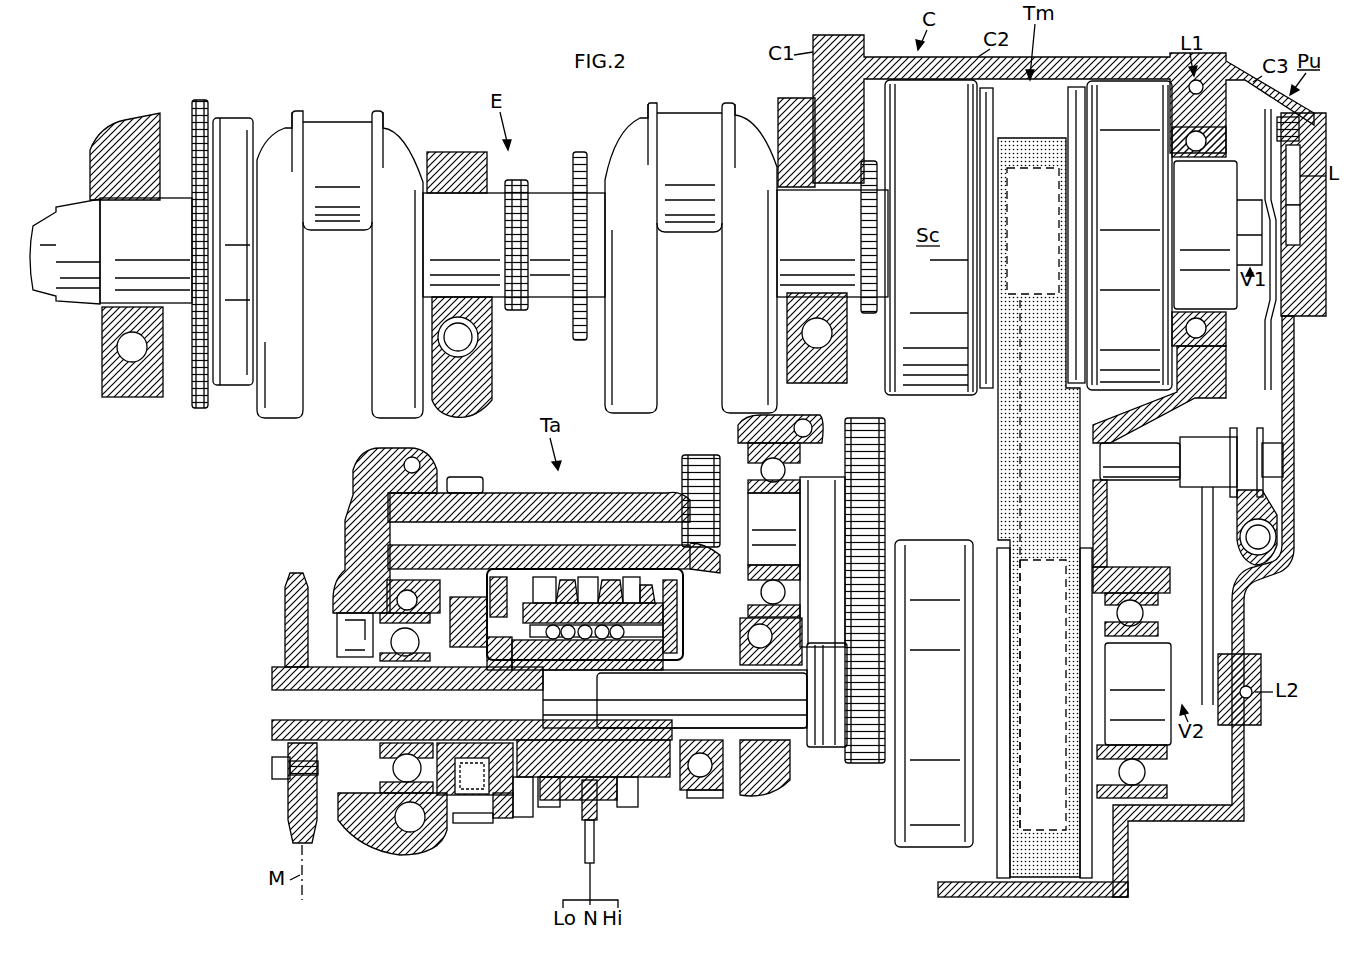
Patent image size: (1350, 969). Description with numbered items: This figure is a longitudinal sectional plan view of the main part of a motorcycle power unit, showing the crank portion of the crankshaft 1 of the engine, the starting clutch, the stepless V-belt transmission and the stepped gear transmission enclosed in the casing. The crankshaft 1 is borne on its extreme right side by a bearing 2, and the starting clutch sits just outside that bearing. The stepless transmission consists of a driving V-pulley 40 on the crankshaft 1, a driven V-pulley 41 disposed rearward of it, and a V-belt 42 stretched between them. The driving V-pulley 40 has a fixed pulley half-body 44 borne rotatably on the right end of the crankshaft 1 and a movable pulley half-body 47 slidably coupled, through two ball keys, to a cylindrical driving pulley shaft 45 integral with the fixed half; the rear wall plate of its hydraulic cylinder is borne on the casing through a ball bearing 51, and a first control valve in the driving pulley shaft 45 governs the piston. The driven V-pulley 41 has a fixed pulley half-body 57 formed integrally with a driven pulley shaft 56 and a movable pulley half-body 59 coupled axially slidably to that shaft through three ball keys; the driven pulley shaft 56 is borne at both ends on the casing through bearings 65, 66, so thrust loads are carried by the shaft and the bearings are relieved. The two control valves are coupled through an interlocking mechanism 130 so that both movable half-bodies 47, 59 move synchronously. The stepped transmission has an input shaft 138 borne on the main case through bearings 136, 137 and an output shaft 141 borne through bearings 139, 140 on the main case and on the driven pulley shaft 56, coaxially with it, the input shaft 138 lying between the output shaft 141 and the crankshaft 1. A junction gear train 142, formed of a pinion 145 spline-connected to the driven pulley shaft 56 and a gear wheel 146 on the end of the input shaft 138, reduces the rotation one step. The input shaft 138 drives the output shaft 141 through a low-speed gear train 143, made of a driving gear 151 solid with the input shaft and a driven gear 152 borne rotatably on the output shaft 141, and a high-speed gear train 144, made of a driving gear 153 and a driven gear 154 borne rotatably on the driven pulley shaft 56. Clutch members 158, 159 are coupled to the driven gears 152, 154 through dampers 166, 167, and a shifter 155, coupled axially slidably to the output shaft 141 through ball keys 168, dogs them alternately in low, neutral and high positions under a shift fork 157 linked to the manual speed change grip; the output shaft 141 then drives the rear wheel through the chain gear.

The crankshaft 1 is at (542, 200).
The bearing 2 is at (814, 182).
The driving V-pulley 40 is at (1118, 80).
The driven V-pulley 41 is at (910, 847).
The V-belt 42 is at (1034, 880).
The fixed pulley half-body 44 is at (987, 115).
The driving pulley shaft 45 is at (1032, 294).
The movable pulley half-body 47 is at (1070, 109).
The ball bearing 51 is at (1189, 97).
The driven pulley shaft 56 is at (675, 699).
The fixed pulley half-body 57 is at (1088, 855).
The movable pulley half-body 59 is at (997, 862).
The bearing 65 is at (771, 641).
The bearing 66 is at (1130, 604).
The interlocking mechanism 130 is at (1285, 466).
The bearing 136 is at (418, 560).
The bearing 137 is at (780, 514).
The input shaft 138 is at (539, 494).
The bearing 139 is at (407, 756).
The bearing 140 is at (628, 730).
The output shaft 141 is at (272, 683).
The junction gear train 142 is at (899, 590).
The low-speed gear train 143 is at (465, 482).
The high-speed gear train 144 is at (702, 454).
The pinion 145 is at (864, 750).
The gear wheel 146 is at (880, 492).
The driving gear 151 is at (483, 485).
The driven gear 152 is at (470, 823).
The driving gear 153 is at (684, 470).
The driven gear 154 is at (705, 800).
The shifter 155 is at (595, 778).
The shift fork 157 is at (594, 848).
The clutch member 158 is at (505, 818).
The clutch member 159 is at (587, 613).
The damper 166 is at (472, 762).
The damper 167 is at (715, 765).
The ball keys 168 is at (565, 640).